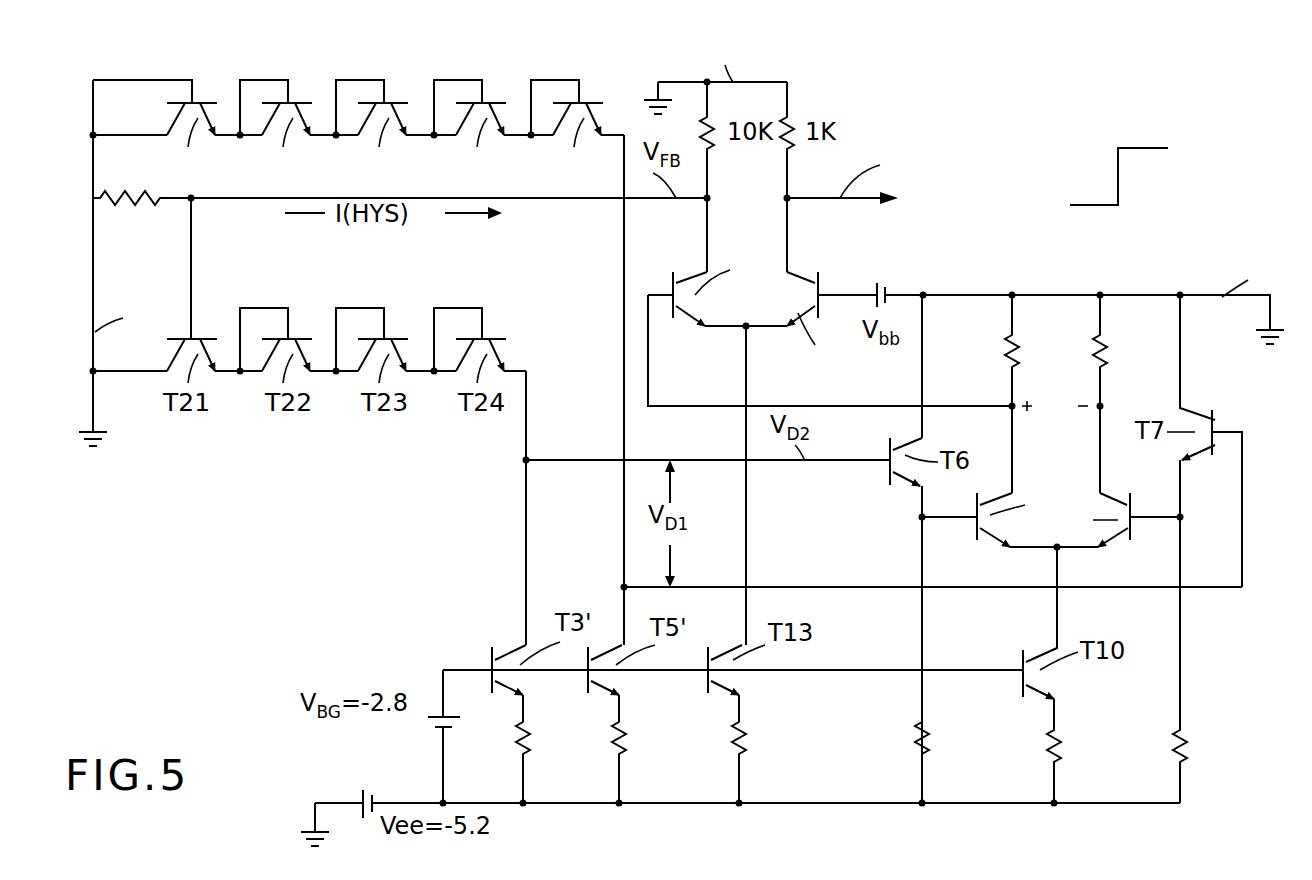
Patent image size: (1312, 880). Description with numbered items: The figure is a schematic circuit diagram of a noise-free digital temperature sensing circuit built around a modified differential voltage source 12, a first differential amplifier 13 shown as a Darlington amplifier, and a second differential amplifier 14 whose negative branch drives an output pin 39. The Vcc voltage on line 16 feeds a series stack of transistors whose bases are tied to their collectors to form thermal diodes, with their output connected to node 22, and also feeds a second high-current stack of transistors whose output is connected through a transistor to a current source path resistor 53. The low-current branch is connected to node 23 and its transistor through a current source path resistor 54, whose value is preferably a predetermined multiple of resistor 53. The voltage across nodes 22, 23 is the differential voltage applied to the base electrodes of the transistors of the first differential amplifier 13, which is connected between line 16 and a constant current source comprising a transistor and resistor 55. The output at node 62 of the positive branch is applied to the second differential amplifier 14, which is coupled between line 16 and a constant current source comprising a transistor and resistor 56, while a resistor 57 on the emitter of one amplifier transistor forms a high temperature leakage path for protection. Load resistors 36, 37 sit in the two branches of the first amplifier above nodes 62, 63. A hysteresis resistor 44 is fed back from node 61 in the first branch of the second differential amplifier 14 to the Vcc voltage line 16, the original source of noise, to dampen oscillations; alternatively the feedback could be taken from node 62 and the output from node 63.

The differential voltage source 12 is at (370, 73).
The hysteresis resistor 44 is at (137, 205).
The Vcc voltage line 16 is at (681, 242).
The feedback node 61 is at (713, 198).
The second differential amplifier 14 is at (762, 290).
The output pin 39 is at (890, 205).
The load resistor 36 is at (1020, 350).
The load resistor 37 is at (1108, 352).
The output node of the first positive branch 62 is at (1016, 405).
The second branch node 63 is at (1106, 407).
The first differential amplifier 13 is at (1051, 487).
The node 22 is at (524, 462).
The node 23 is at (622, 585).
The current source path resistor 53 is at (530, 752).
The current source path resistor 54 is at (626, 752).
The resistor 55 is at (1062, 745).
The resistor 56 is at (746, 752).
The resistor 57 is at (928, 752).